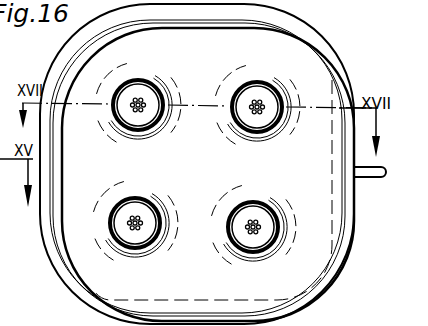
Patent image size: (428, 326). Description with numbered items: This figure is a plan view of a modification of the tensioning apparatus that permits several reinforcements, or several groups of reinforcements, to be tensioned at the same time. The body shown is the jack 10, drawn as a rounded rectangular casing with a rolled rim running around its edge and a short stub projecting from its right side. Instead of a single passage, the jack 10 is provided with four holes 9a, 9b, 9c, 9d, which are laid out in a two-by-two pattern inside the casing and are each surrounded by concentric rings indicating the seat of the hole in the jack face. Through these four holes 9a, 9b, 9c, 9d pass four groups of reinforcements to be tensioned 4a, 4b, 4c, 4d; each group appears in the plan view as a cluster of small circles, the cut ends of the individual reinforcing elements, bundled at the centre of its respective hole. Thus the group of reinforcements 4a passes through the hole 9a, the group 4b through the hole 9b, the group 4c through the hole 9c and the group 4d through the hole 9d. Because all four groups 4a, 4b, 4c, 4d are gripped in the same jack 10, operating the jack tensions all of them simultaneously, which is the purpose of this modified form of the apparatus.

The jack 10 is at (8, 161).
The group of reinforcements to be tensioned 4a is at (120, 123).
The group of reinforcements to be tensioned 4b is at (238, 122).
The group of reinforcements to be tensioned 4c is at (123, 242).
The group of reinforcements to be tensioned 4d is at (243, 251).
The hole 9a is at (147, 98).
The hole 9b is at (265, 104).
The hole 9c is at (136, 214).
The hole 9d is at (267, 220).